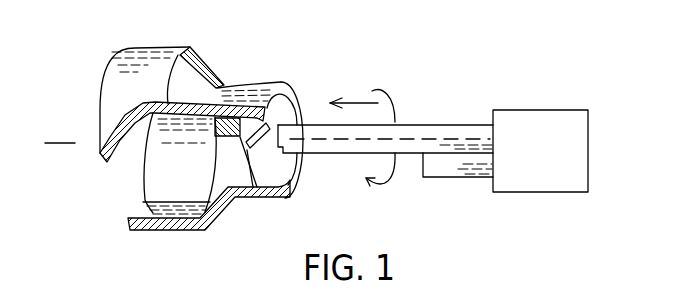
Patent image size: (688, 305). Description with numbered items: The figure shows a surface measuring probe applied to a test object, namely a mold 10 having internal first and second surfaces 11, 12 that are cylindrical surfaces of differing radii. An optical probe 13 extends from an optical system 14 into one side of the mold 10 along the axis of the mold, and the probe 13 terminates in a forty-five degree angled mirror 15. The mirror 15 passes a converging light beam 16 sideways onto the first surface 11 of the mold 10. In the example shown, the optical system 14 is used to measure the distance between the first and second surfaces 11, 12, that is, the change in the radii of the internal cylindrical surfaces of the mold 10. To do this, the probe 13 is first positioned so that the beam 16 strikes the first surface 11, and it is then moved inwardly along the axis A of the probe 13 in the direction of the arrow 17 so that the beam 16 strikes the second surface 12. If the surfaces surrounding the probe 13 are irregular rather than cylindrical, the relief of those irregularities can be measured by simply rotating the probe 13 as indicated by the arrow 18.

The mold 10 is at (220, 70).
The first surface 11 is at (294, 180).
The second surface 12 is at (145, 203).
The optical probe 13 is at (427, 123).
The optical system 14 is at (522, 108).
The 45° angled mirror 15 is at (215, 137).
The converging light beam 16 is at (258, 160).
The arrow 17 is at (362, 103).
The arrow 18 is at (395, 107).
The axis A is at (64, 142).